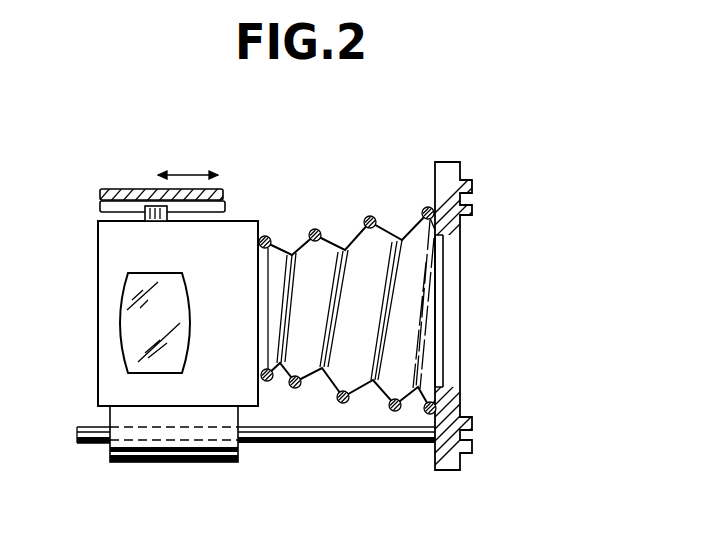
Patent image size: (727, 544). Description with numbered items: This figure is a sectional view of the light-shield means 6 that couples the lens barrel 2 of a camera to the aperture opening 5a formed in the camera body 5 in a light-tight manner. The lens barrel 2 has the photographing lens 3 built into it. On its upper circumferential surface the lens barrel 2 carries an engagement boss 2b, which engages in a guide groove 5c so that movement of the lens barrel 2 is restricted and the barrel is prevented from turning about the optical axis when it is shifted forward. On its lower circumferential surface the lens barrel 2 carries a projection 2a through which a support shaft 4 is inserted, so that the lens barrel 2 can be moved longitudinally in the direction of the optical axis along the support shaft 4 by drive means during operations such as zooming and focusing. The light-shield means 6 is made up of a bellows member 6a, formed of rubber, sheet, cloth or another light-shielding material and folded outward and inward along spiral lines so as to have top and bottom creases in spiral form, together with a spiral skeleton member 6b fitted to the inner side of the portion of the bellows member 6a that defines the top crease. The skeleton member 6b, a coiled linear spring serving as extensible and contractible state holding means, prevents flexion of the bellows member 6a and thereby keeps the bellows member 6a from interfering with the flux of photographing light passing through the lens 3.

The lens barrel 2 is at (239, 247).
The projection 2a is at (175, 450).
The engagement boss 2b is at (157, 206).
The photographing lens 3 is at (133, 340).
The support shaft 4 is at (308, 443).
The camera body 5 is at (470, 457).
The aperture opening 5a is at (440, 240).
The guide groove 5c is at (122, 197).
The light-shield means 6 is at (359, 338).
The bellows member 6a is at (384, 247).
The spiral skeleton member 6b is at (315, 229).